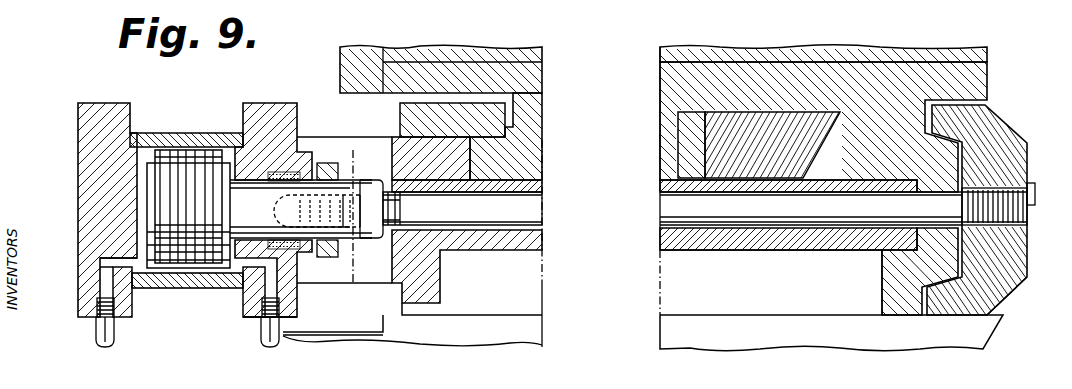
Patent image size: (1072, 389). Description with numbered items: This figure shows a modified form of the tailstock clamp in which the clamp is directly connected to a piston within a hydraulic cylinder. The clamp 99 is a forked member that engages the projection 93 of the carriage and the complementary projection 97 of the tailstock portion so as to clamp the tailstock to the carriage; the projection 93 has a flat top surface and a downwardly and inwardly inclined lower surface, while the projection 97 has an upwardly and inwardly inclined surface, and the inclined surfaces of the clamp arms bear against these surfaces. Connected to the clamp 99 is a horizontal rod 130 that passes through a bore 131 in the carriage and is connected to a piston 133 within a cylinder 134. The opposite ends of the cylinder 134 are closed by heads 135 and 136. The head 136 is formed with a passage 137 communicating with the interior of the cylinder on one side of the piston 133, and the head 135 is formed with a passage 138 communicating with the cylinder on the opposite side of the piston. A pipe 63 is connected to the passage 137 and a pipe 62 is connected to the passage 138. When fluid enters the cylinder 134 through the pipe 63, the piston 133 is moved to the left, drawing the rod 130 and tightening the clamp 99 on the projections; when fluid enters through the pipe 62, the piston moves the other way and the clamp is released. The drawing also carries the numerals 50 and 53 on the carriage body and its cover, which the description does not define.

The housing body 50 is at (708, 0).
The housing cover 53 is at (653, 0).
The pipe 62 is at (95, 328).
The pipe 63 is at (263, 327).
The projection 93 is at (942, 265).
The projection 97 is at (937, 152).
The clamp 99 is at (1027, 287).
The horizontal rod 130 is at (463, 218).
The bore 131 is at (797, 227).
The piston 133 is at (185, 252).
The cylinder 134 is at (217, 290).
The head 135 is at (113, 110).
The head 136 is at (292, 121).
The passage 137 is at (290, 303).
The passage 138 is at (107, 275).